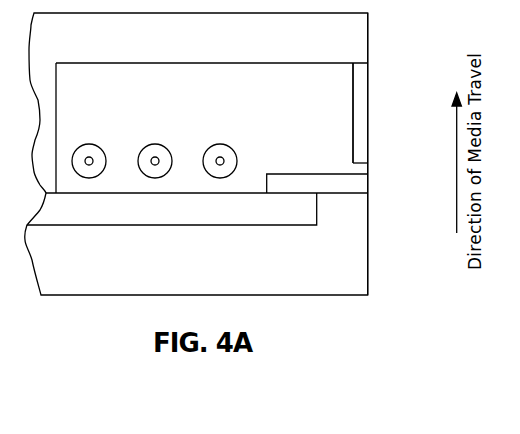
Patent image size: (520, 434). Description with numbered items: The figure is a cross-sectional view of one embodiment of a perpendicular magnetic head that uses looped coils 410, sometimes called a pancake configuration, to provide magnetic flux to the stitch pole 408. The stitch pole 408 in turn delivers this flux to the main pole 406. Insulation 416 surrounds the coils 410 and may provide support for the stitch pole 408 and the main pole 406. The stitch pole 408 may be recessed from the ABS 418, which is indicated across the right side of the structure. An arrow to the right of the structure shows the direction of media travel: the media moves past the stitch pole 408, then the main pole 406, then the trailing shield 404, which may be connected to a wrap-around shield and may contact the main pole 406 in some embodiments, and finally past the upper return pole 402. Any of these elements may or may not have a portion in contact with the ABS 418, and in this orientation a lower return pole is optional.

The upper return pole 402 is at (281, 48).
The trailing shield 404 is at (368, 97).
The main pole 406 is at (368, 178).
The stitch pole 408 is at (230, 218).
The looped coils 410 is at (89, 143).
The insulation 416 is at (317, 138).
The ABS 418 is at (370, 28).